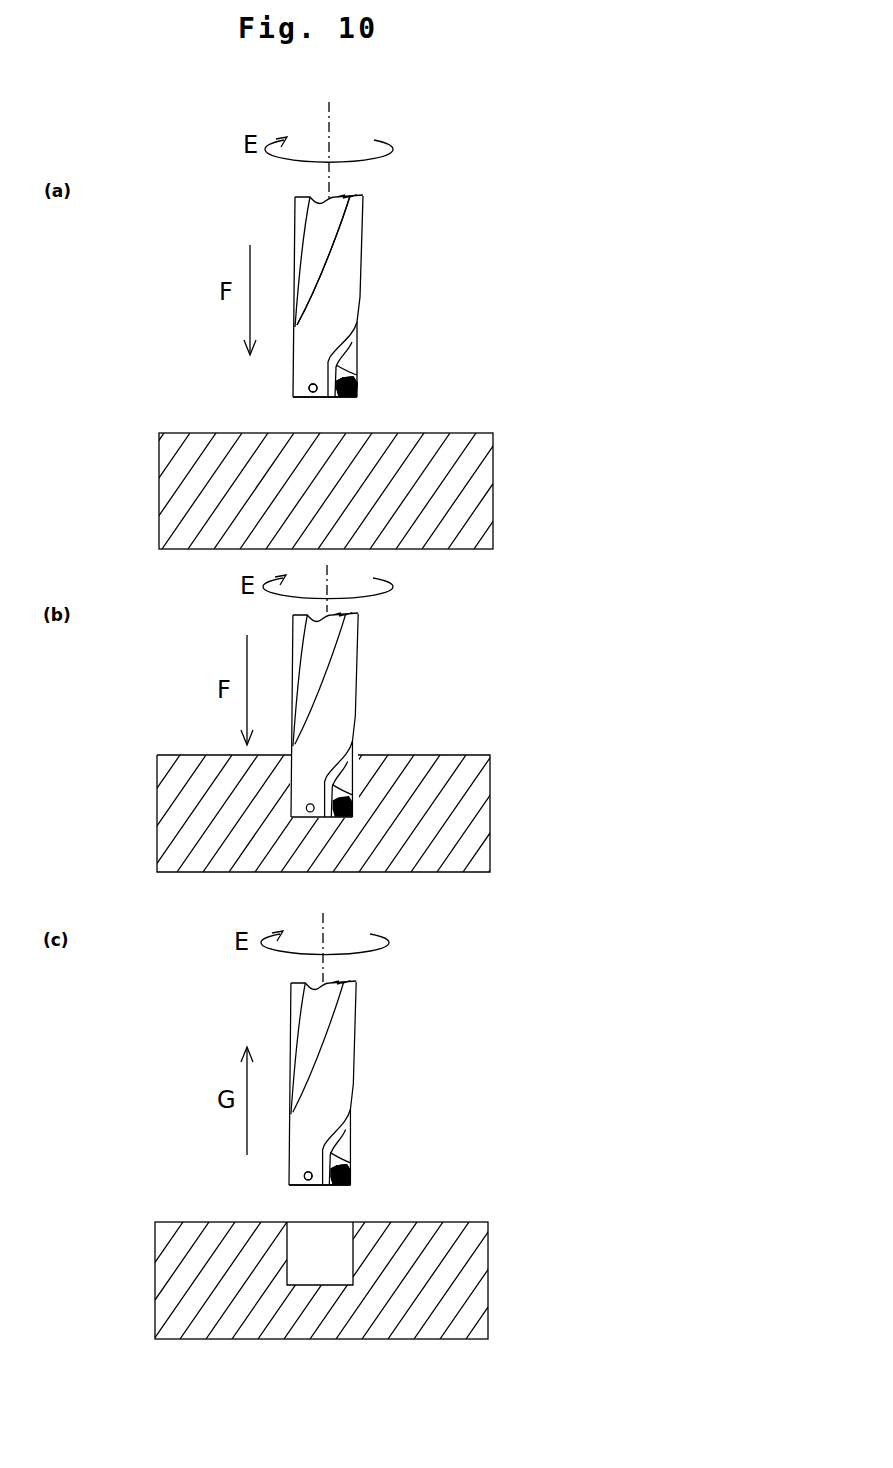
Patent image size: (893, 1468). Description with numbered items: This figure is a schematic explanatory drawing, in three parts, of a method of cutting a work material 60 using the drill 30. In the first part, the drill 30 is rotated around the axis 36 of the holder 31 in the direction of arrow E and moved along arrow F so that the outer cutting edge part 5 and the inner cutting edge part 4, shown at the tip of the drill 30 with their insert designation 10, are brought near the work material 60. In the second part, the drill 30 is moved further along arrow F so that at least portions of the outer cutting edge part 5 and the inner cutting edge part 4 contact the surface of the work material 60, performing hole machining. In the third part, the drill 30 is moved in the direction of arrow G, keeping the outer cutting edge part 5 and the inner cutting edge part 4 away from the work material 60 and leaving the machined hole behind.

The inner cutting edge part 4 is at (313, 399).
The outer cutting edge part 5 is at (354, 399).
The cutting insert 10 is at (330, 791).
The drill 30 is at (375, 225).
The holder 31 is at (343, 292).
The axis 36 is at (333, 113).
The work material 60 is at (462, 495).